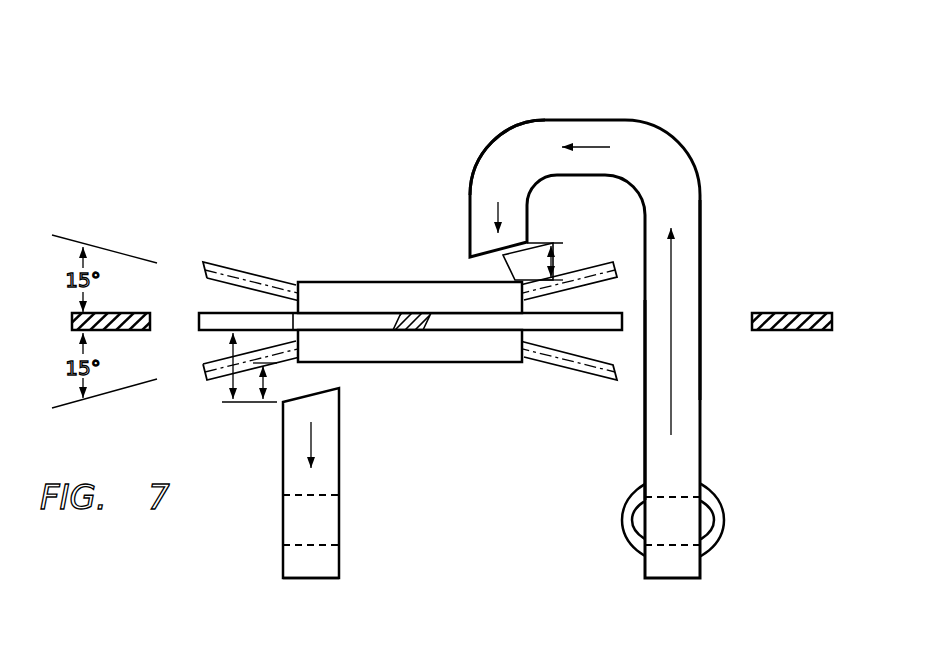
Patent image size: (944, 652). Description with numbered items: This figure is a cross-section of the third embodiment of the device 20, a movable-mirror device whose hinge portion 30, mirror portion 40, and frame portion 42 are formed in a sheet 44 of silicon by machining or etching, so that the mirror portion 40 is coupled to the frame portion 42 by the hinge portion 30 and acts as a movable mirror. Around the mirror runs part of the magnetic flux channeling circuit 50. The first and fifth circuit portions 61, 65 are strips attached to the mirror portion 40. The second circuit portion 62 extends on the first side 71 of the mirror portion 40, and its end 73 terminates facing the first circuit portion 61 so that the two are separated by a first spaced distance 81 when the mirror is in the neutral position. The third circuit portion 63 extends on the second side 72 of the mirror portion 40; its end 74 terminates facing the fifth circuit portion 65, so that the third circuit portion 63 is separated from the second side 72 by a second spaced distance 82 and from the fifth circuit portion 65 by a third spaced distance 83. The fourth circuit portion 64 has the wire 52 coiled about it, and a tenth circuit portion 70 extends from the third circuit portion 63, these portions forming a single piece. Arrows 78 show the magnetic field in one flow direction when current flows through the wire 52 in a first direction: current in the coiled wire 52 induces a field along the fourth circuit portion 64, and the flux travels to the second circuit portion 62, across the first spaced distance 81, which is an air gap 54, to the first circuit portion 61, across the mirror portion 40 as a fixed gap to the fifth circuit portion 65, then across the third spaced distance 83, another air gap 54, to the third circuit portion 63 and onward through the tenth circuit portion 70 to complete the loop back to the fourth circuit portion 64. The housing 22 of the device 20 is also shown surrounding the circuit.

The device 20 is at (671, 94).
The duct housing 22 is at (703, 169).
The hinge portion 30 is at (452, 332).
The mirror portion 40 is at (259, 318).
The frame portion 42 is at (72, 321).
The sheet 44 is at (835, 321).
The magnetic flux channeling circuit 50 is at (704, 353).
The wire 52 is at (625, 520).
The air gap 54 is at (464, 273).
The first circuit portion 61 is at (324, 286).
The second circuit portion 62 is at (542, 133).
The third circuit portion 63 is at (340, 560).
The fourth circuit portion 64 is at (680, 495).
The fifth circuit portion 65 is at (497, 350).
The tenth circuit portion 70 is at (318, 495).
The first side 71 is at (206, 314).
The second side 72 is at (218, 332).
The end 73 is at (476, 258).
The end 74 is at (340, 378).
The arrows 78 is at (592, 147).
The first spaced distance 81 is at (557, 262).
The second spaced distance 82 is at (226, 372).
The third spaced distance 83 is at (257, 396).